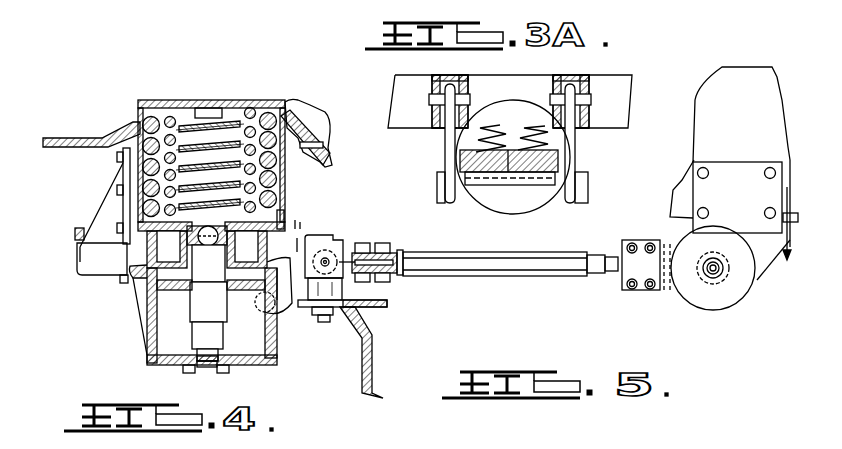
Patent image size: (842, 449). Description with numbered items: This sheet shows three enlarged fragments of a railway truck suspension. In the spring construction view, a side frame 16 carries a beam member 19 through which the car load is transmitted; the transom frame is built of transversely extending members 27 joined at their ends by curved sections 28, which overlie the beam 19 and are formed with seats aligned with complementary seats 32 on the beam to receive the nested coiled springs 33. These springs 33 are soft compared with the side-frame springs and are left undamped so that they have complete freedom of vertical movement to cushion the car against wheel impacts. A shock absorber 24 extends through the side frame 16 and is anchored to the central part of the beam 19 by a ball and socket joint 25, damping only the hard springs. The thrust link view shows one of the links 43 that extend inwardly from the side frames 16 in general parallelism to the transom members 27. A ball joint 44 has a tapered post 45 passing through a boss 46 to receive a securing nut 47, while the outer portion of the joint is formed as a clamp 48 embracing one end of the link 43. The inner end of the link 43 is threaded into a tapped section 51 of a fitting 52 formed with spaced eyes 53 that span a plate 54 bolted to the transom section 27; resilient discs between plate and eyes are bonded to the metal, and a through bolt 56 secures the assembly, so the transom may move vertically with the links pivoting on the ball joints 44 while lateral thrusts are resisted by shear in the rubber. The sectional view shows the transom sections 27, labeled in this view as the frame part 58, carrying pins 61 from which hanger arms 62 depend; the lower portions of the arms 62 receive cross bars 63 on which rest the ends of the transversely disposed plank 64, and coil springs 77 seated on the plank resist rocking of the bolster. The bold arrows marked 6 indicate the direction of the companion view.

In FIG. 4, the arrow / viewing direction 6 is at (294, 289).
In FIG. 5, the arrow / viewing direction 6 is at (782, 235).
In FIG. 4, the side frame 16 is at (160, 362).
In FIG. 4, the beam member 19 is at (266, 310).
In FIG. 4, the shock absorber 24 is at (193, 332).
In FIG. 4, the ball and socket joint 25 is at (200, 237).
In FIG. 3A, the transom member 27 is at (434, 124).
In FIG. 4, the transom member 27 is at (298, 115).
In FIG. 3A, the curved section 28 is at (475, 85).
In FIG. 4, the seat 32 is at (285, 223).
In FIG. 4, the nested coiled springs 33 is at (268, 182).
In FIG. 5, the link 43 is at (487, 275).
In FIG. 4, the ball joint 44 is at (330, 240).
In FIG. 4, the tapered post 45 is at (345, 290).
In FIG. 4, the boss 46 is at (367, 313).
In FIG. 4, the securing nut 47 is at (328, 322).
In FIG. 4, the clamp 48 is at (372, 250).
In FIG. 5, the tapped section 51 is at (628, 273).
In FIG. 5, the fitting 52 is at (660, 291).
In FIG. 5, the eye 53 is at (716, 300).
In FIG. 5, the plate 54 is at (693, 181).
In FIG. 5, the through bolt 56 is at (738, 273).
In FIG. 3A, the bar 58 is at (394, 89).
In FIG. 3A, the pin 61 is at (430, 100).
In FIG. 3A, the hanger arm 62 is at (446, 140).
In FIG. 3A, the cross bar 63 is at (535, 195).
In FIG. 3A, the plank 64 is at (490, 172).
In FIG. 3A, the coil spring 77 is at (519, 130).